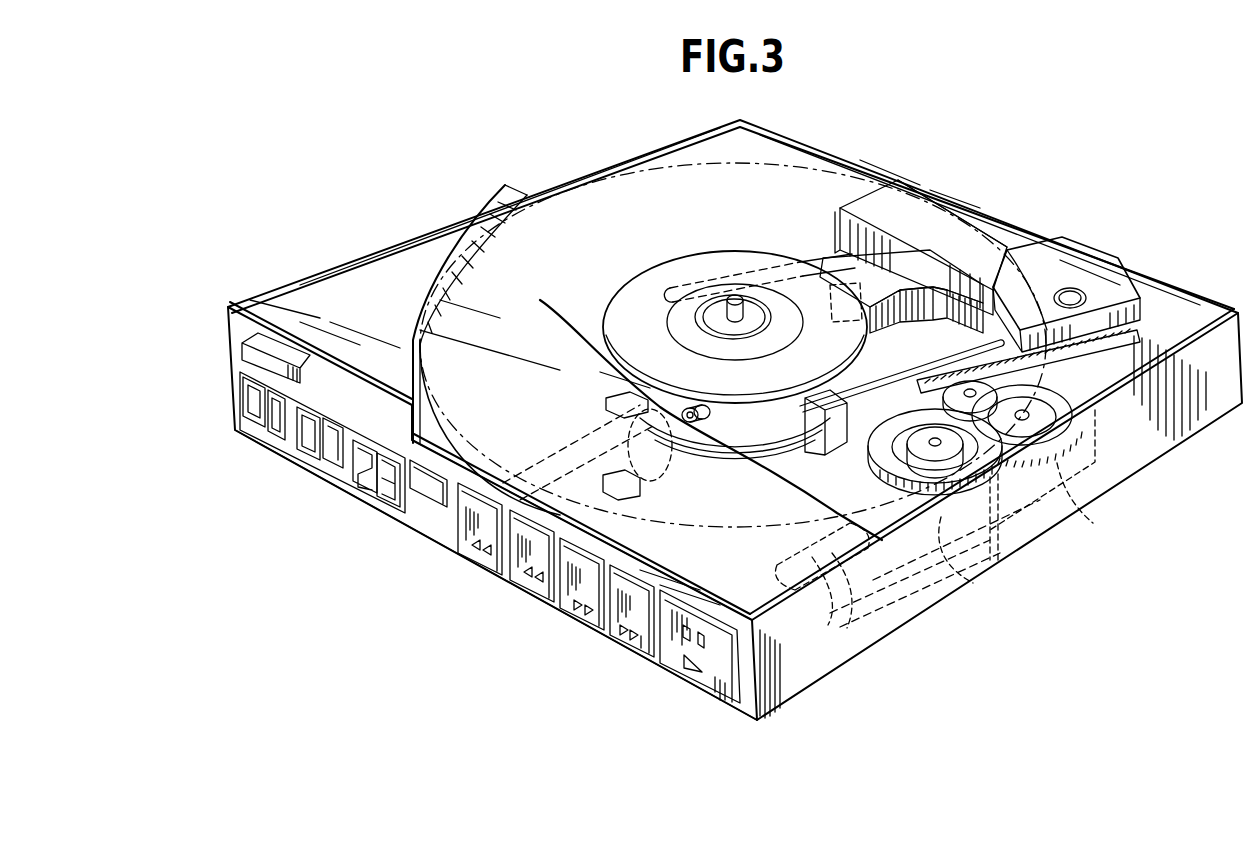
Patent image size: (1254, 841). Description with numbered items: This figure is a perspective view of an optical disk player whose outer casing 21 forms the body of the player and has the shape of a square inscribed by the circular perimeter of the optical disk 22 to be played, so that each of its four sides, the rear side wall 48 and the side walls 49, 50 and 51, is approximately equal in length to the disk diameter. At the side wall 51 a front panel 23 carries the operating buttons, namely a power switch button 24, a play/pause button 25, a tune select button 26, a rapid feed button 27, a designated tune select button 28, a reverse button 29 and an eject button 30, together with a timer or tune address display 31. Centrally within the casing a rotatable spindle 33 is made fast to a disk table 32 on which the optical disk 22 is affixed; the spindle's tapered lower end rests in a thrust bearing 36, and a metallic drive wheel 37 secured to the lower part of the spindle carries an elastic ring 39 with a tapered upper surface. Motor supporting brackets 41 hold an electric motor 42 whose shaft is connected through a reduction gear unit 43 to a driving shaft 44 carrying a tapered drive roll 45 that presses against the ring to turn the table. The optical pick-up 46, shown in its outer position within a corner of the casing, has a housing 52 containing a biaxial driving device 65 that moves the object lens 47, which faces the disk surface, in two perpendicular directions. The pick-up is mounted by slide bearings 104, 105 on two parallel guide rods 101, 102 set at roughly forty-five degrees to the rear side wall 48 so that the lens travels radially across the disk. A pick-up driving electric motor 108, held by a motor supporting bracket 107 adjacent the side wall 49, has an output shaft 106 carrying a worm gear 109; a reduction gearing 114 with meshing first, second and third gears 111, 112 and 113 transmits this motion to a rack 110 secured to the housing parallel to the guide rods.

The outer casing 21 is at (779, 133).
The optical disk 22 is at (614, 188).
The front panel 23 is at (452, 533).
The power switch button 24 is at (240, 360).
The play/pause button 25 is at (709, 681).
The tune select button 26 is at (629, 642).
The rapid feed button 27 is at (579, 616).
The designated tune select button 28 is at (536, 595).
The reverse button 29 is at (488, 568).
The eject button 30 is at (430, 492).
The timer or tune address display 31 is at (292, 443).
The disk table 32 is at (627, 292).
The spindle 33 is at (733, 297).
The thrust bearing 36 is at (800, 440).
The metallic drive wheel 37 is at (605, 366).
The elastic ring 39 is at (762, 440).
The motor supporting brackets 41 is at (641, 500).
The electric motor 42 is at (583, 457).
The reduction gear unit 43 is at (612, 399).
The driving shaft 44 is at (689, 425).
The tapered drive roll 45 is at (703, 421).
The optical pick-up 46 is at (928, 208).
The object lens 47 is at (1074, 293).
The rear side wall 48 is at (852, 172).
The side wall 49 is at (1130, 455).
The side wall 50 is at (693, 139).
The side wall 51 is at (365, 410).
The housing 52 is at (1005, 226).
The biaxial driving device 65 is at (1113, 277).
The guide rod 101 is at (824, 265).
The guide rod 102 is at (902, 370).
The slide bearing 104 is at (840, 262).
The slide bearing 105 is at (962, 349).
The output shaft 106 is at (966, 567).
The motor supporting bracket 107 is at (850, 642).
The pick-up driving electric motor 108 is at (930, 606).
The worm gear 109 is at (1002, 548).
The rack 110 is at (1082, 346).
The first gear 111 is at (882, 449).
The second gear 112 is at (1050, 402).
The third gear 113 is at (900, 407).
The reduction gearing 114 is at (1023, 421).